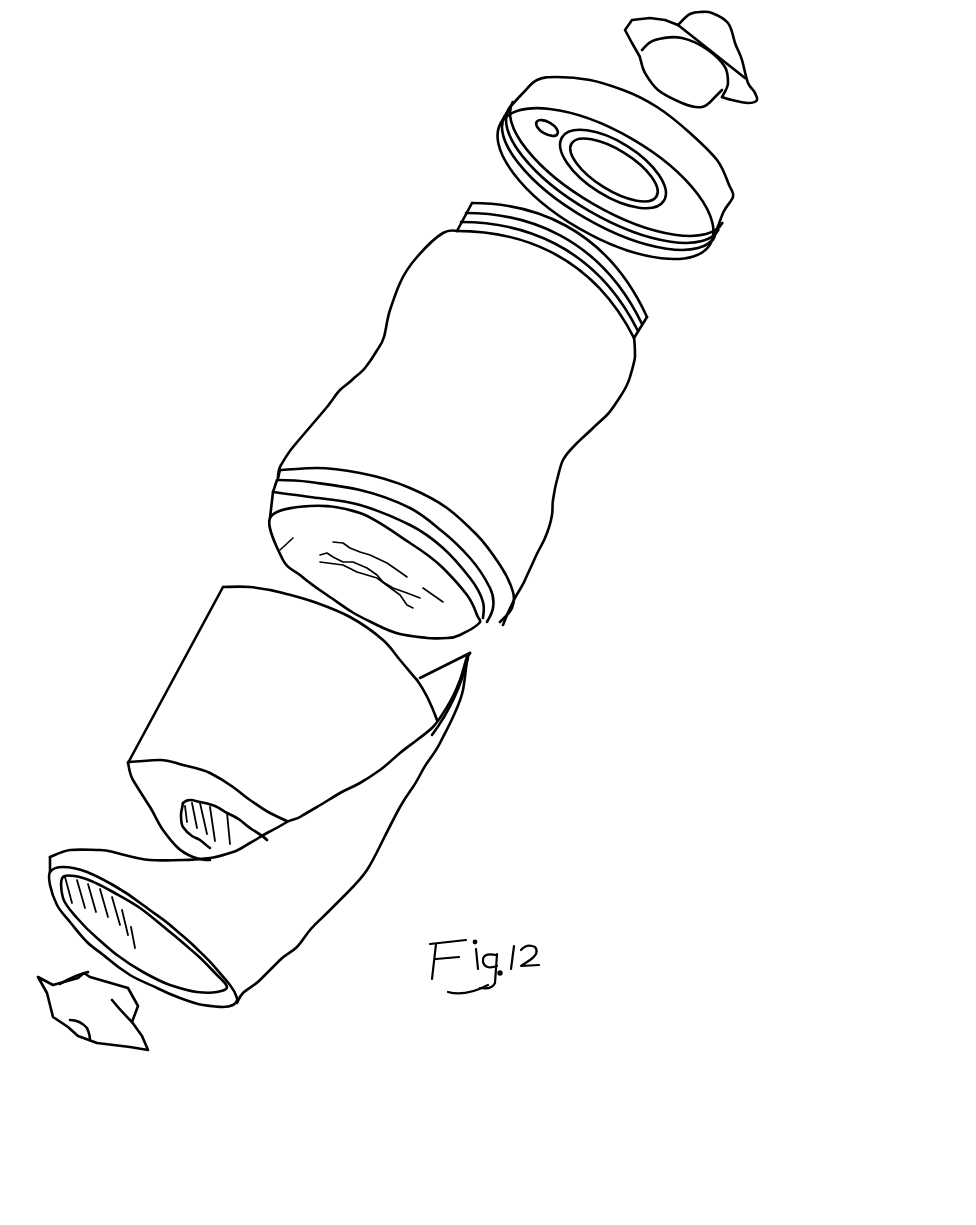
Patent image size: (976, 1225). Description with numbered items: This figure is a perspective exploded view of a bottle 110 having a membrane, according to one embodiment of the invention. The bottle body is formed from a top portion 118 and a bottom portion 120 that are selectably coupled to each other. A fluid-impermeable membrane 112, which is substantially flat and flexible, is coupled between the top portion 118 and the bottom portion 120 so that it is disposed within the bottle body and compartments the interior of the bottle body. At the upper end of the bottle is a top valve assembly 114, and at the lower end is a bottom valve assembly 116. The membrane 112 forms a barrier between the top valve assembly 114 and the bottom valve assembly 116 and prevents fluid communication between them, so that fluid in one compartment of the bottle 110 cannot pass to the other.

The bottle 110 is at (246, 150).
The fluid-impermeable membrane 112 is at (277, 553).
The top valve assembly 114 is at (781, 84).
The bottom valve assembly 116 is at (177, 1063).
The top portion of the bottle body 118 is at (597, 430).
The bottom portion of the bottle body 120 is at (250, 697).